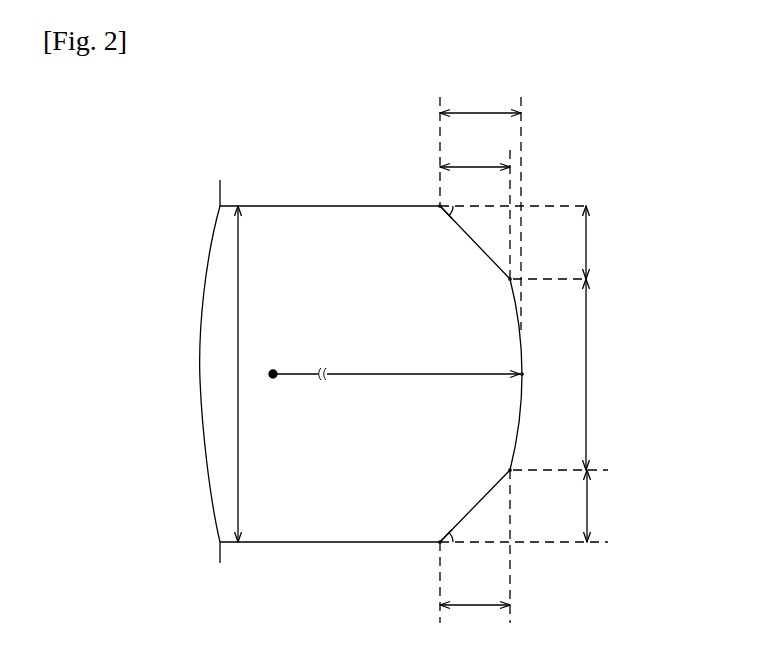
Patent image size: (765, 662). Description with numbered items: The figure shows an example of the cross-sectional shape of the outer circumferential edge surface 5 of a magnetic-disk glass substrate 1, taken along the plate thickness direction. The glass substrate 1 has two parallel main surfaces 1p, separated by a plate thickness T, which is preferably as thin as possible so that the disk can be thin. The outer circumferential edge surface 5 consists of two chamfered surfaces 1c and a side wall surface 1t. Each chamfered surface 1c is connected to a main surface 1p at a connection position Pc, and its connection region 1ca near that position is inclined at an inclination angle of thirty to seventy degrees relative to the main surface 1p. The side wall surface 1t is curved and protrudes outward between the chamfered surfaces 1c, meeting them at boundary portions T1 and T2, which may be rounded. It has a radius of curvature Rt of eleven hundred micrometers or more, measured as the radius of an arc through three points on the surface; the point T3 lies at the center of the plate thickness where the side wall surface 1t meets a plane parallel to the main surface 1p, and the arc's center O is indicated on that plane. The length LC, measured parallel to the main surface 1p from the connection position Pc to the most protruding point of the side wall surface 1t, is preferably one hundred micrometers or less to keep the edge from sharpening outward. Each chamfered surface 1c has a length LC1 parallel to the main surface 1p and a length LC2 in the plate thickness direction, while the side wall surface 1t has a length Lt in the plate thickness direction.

The glass substrate 1 is at (425, 357).
The outer circumferential edge surface 5 is at (525, 379).
The main surface 1p is at (355, 205).
The chamfered surface 1c is at (481, 249).
The connection region 1ca is at (457, 205).
The side wall surface 1t is at (524, 386).
The connection position Pc is at (438, 205).
The boundary portion T1 is at (512, 278).
The boundary portion T2 is at (513, 473).
The point on the side wall surface T3 is at (523, 374).
The plate thickness T is at (247, 374).
The center of curvature O is at (264, 374).
The radius of curvature Rt is at (398, 383).
The length Lc LC is at (480, 102).
The length Lc1 LC1 is at (475, 388).
The length Lc2 LC2 is at (602, 374).
The length Lt is at (597, 374).